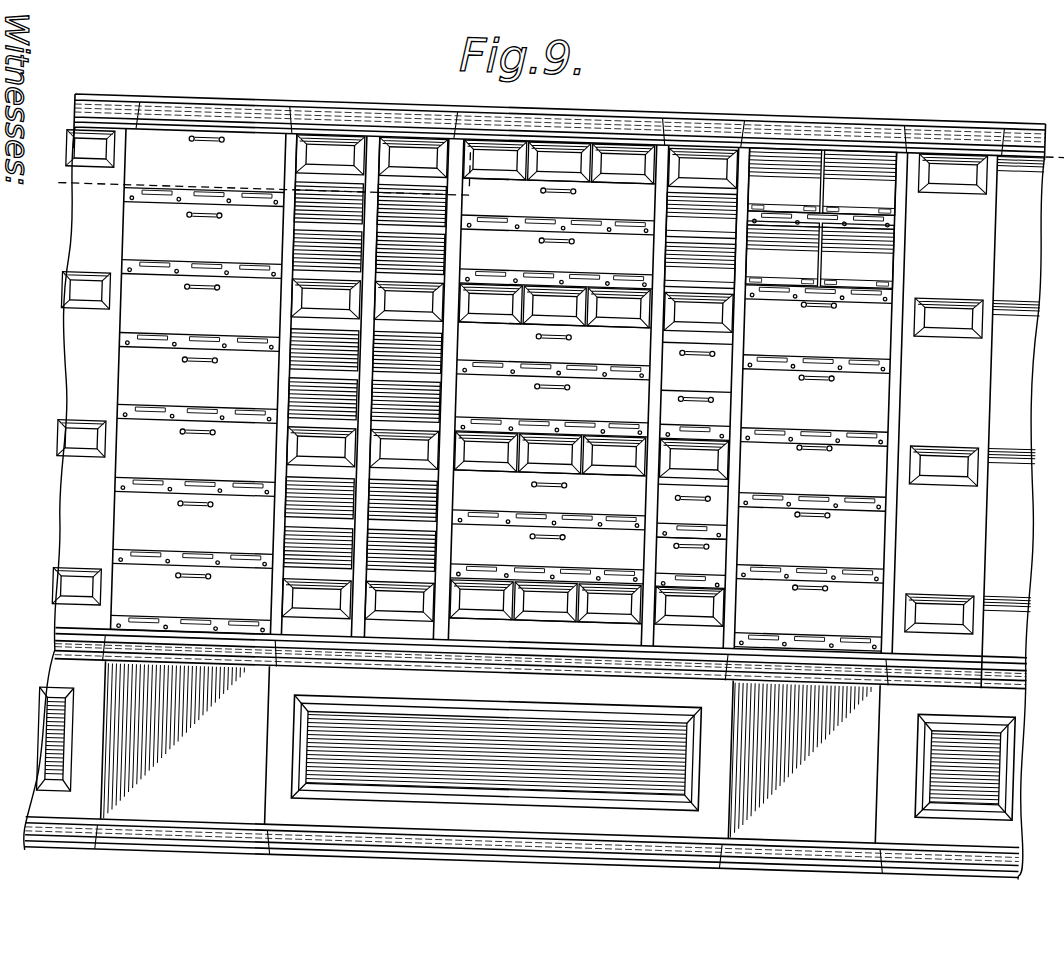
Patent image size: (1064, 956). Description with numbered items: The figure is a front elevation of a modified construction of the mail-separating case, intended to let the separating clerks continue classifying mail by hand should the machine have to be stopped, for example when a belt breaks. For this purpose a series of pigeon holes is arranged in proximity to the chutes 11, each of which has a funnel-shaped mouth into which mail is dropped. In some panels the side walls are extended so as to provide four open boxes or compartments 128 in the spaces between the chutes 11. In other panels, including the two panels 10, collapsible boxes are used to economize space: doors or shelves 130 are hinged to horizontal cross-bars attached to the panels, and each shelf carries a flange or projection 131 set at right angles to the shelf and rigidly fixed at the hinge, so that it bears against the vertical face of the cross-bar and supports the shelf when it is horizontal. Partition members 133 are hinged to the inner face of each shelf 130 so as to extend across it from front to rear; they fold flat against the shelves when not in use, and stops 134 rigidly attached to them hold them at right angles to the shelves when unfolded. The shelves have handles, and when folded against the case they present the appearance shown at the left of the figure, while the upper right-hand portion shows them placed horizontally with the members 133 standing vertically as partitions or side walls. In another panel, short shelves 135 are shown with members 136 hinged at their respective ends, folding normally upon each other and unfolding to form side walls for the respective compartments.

The panels 10 is at (62, 102).
The chute 11 is at (401, 133).
The open boxes or compartments 128 is at (310, 238).
The doors or shelves 130 is at (945, 220).
The flange or projection 131 is at (252, 408).
The partition members 133 is at (830, 155).
The stops 134 is at (833, 267).
The short shelves 135 is at (695, 251).
The members 136 is at (662, 227).